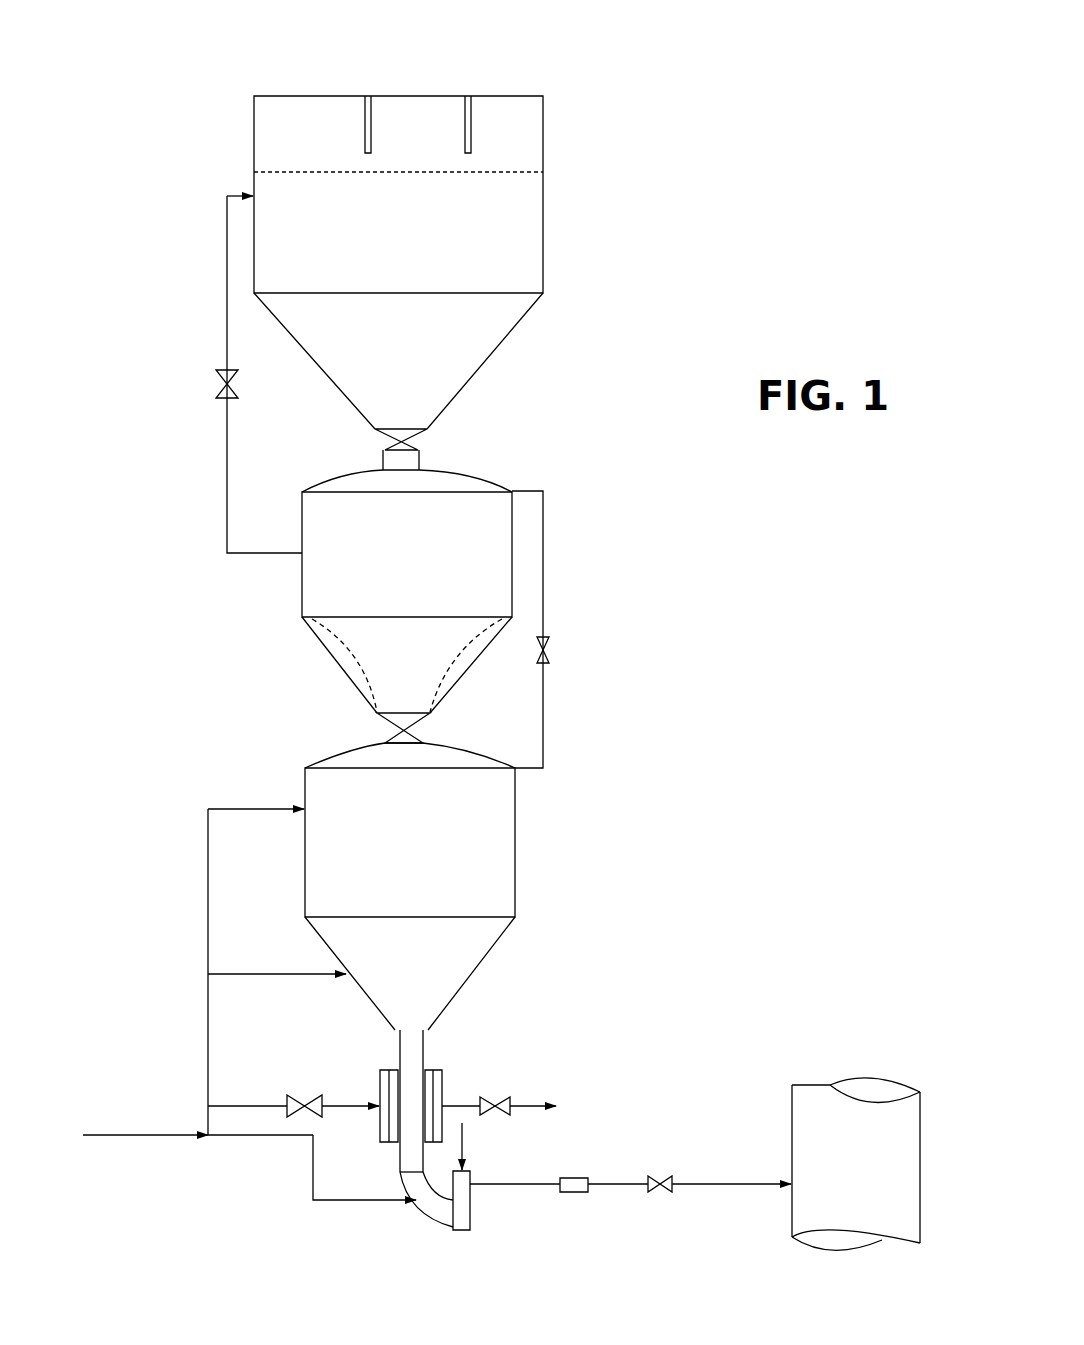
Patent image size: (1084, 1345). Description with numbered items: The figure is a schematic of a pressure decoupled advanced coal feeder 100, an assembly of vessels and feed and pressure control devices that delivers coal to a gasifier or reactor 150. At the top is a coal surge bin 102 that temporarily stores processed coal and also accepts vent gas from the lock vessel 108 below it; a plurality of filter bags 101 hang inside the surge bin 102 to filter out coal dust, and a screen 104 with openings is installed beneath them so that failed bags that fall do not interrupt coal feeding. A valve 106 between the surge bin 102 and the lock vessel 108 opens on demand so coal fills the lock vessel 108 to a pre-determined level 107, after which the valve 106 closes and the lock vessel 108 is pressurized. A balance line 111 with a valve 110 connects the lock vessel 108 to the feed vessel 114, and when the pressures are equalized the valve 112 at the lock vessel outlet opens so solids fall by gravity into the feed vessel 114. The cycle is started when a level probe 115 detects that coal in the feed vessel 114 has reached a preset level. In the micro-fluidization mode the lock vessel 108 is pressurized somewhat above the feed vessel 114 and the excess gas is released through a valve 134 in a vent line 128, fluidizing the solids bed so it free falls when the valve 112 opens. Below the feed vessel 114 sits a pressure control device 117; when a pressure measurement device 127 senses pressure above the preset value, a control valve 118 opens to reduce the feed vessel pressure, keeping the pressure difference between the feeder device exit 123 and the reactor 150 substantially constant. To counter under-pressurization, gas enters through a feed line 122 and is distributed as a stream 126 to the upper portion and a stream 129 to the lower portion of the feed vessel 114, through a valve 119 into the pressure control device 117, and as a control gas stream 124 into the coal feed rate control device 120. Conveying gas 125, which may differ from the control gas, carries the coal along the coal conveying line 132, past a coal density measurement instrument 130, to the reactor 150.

The pressure decoupled advanced coal feeder 100 is at (563, 90).
The filter bags 101 is at (465, 125).
The coal surge bin 102 is at (398, 262).
The screen 104 is at (523, 172).
The valve 106 is at (408, 438).
The pre-determined level 107 is at (340, 515).
The lock vessel 108 is at (283, 605).
The valve 110 is at (547, 650).
The balance line 111 is at (543, 618).
The valve 112 is at (412, 733).
The feed vessel 114 is at (410, 886).
The level probe 115 is at (470, 897).
The pressure control device 117 is at (365, 1085).
The control valve 118 is at (495, 1100).
The valve 119 is at (300, 1098).
The coal feed rate control device 120 is at (428, 1228).
The feed line 122 is at (198, 972).
The feeder device exit 123 is at (565, 1123).
The control gas stream 124 is at (364, 1167).
The conveying gas 125 is at (482, 1176).
The gas stream 126 is at (256, 800).
The pressure measurement device 127 is at (465, 798).
The vent line 128 is at (222, 348).
The gas stream 129 is at (277, 962).
The coal density measurement instrument 130 is at (572, 1192).
The coal conveying line 132 is at (724, 1185).
The valve 134 is at (225, 382).
The gasifier or reactor 150 is at (856, 1164).